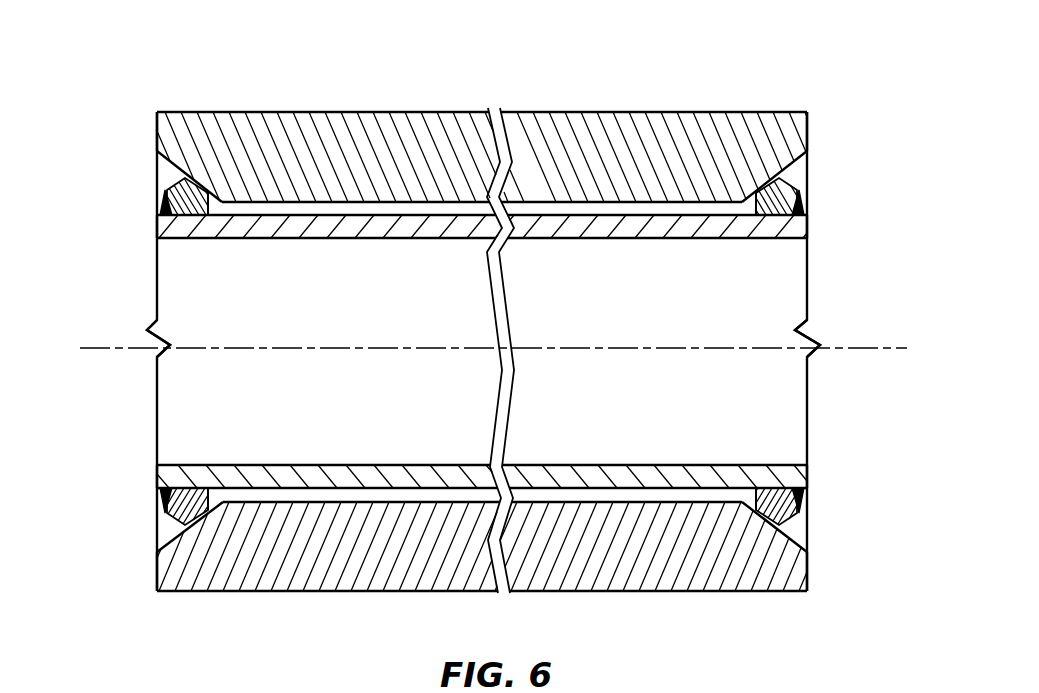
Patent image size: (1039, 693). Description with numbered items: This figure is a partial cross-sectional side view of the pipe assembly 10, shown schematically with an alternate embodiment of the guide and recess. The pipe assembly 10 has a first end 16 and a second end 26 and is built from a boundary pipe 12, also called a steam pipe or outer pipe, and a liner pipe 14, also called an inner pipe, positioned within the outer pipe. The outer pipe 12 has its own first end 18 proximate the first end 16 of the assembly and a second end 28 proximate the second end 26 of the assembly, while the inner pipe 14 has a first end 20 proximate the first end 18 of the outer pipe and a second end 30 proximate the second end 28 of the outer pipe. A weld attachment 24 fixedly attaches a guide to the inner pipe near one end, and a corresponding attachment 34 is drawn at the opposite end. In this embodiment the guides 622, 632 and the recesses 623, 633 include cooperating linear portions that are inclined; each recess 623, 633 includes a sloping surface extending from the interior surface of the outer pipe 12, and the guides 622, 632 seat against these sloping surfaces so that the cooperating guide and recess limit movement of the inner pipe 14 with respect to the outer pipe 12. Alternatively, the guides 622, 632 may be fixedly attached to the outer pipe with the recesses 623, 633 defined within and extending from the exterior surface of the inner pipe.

The pipe assembly 10 is at (722, 75).
The boundary pipe 12 is at (483, 168).
The liner pipe 14 is at (483, 238).
The first end 16 is at (880, 130).
The first end 18 is at (808, 128).
The first end 20 is at (809, 222).
The weld attachment 24 is at (808, 195).
The second end 26 is at (88, 128).
The second end 28 is at (157, 128).
The second end 30 is at (156, 222).
The second seal 34 is at (170, 191).
The guide 622 is at (762, 207).
The recess 623 is at (772, 142).
The guide 632 is at (202, 204).
The recess 633 is at (185, 140).